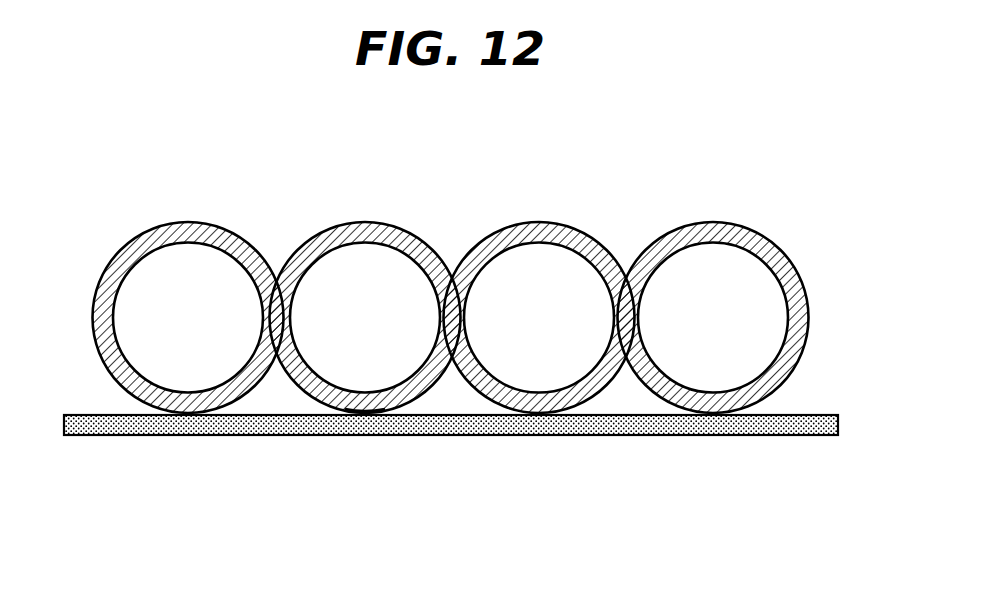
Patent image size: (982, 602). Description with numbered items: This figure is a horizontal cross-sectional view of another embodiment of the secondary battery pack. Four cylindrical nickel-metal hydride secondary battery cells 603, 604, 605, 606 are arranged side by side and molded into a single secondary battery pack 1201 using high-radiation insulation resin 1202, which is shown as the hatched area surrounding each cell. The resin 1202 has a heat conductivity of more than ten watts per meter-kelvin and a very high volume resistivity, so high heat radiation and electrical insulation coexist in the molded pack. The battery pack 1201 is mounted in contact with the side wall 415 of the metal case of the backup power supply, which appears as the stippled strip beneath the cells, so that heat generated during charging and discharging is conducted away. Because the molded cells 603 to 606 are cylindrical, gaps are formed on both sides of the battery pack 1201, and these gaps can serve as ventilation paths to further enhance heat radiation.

The secondary battery cell 603 is at (194, 265).
The secondary battery cell 604 is at (365, 326).
The secondary battery cell 605 is at (541, 273).
The secondary battery cell 606 is at (707, 265).
The secondary battery pack 1201 is at (597, 237).
The high-radiation insulation resin 1202 is at (370, 407).
The side wall of the metal case 415 is at (635, 435).